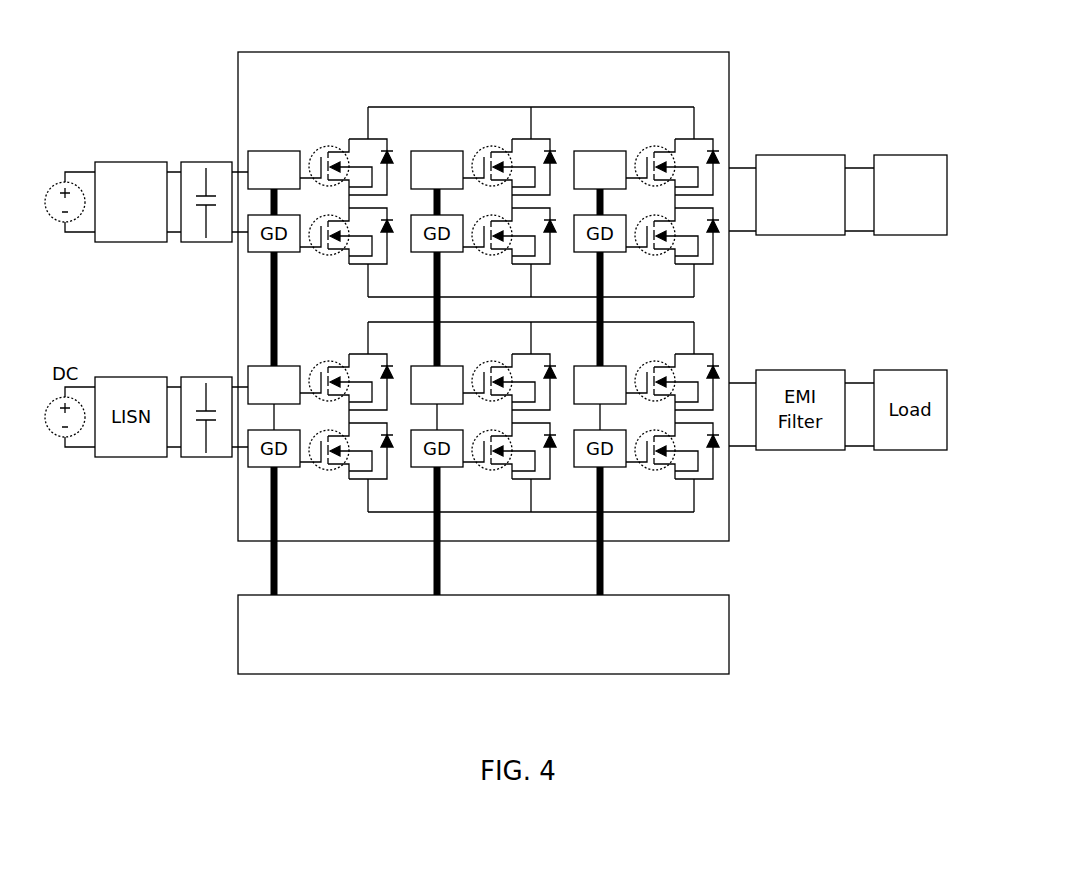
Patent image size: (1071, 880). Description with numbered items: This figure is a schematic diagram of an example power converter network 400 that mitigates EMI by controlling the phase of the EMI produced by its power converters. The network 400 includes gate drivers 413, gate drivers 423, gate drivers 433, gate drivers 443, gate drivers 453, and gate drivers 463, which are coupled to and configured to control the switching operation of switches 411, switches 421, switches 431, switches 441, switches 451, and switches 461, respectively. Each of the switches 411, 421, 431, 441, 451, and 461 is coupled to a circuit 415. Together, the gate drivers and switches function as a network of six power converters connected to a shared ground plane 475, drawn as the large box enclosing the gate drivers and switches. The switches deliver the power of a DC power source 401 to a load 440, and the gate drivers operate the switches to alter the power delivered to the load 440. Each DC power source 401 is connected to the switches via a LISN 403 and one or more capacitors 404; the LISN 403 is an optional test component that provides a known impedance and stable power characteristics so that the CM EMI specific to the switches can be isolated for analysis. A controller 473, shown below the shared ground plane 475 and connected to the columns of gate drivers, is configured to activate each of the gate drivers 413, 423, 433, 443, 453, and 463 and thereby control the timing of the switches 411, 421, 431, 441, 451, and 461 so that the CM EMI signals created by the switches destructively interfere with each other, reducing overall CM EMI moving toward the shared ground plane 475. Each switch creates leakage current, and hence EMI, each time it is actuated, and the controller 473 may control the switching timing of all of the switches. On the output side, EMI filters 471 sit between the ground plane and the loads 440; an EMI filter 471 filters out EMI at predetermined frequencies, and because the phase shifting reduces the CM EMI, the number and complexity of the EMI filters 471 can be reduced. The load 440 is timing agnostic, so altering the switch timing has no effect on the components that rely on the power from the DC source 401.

The power converter network 400 is at (118, 78).
The DC power source 401 is at (62, 223).
The LISN 403 is at (160, 137).
The capacitors 404 is at (203, 243).
The switches 411 is at (332, 252).
The gate drivers 413 is at (266, 148).
The circuit 415 is at (480, 155).
The switches 421 is at (508, 255).
The gate drivers 423 is at (468, 151).
The switches 431 is at (670, 251).
The gate drivers 433 is at (607, 150).
The load 440 is at (898, 152).
The switches 441 is at (345, 470).
The gate drivers 443 is at (304, 365).
The switches 451 is at (508, 470).
The gate drivers 453 is at (467, 365).
The switches 461 is at (671, 470).
The gate drivers 463 is at (630, 365).
The EMI filters 471 is at (795, 153).
The controller 473 is at (729, 637).
The shared ground plane 475 is at (485, 52).